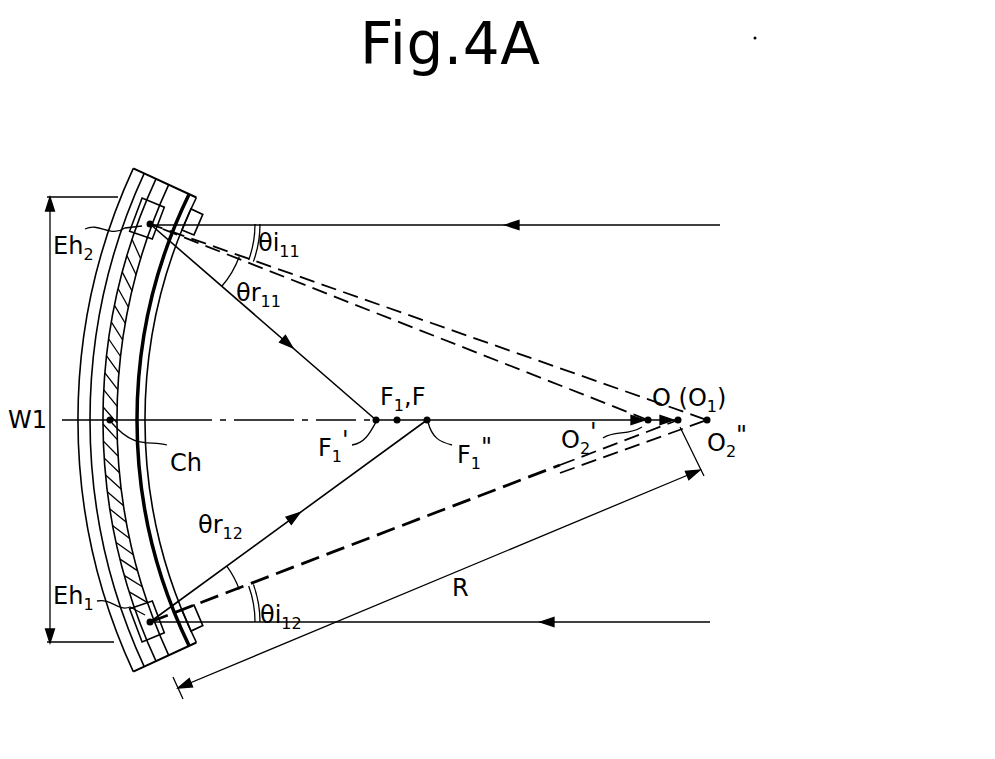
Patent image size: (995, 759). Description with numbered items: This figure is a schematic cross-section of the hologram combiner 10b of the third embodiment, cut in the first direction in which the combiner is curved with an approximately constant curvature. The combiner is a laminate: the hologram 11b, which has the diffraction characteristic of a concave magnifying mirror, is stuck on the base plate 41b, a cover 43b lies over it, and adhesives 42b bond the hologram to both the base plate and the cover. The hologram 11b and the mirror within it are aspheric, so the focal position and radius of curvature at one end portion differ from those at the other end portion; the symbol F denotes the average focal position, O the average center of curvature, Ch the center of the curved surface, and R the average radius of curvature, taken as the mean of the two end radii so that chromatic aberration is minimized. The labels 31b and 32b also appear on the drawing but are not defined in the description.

The concave grating unit 10b is at (178, 404).
The curved grating substrate 11b is at (182, 180).
The holding member 41b is at (197, 194).
The holding member 42b is at (158, 671).
The reflective layer 43b is at (145, 168).
The incident light beam 31b is at (580, 223).
The diffracted light beam 32b is at (345, 481).